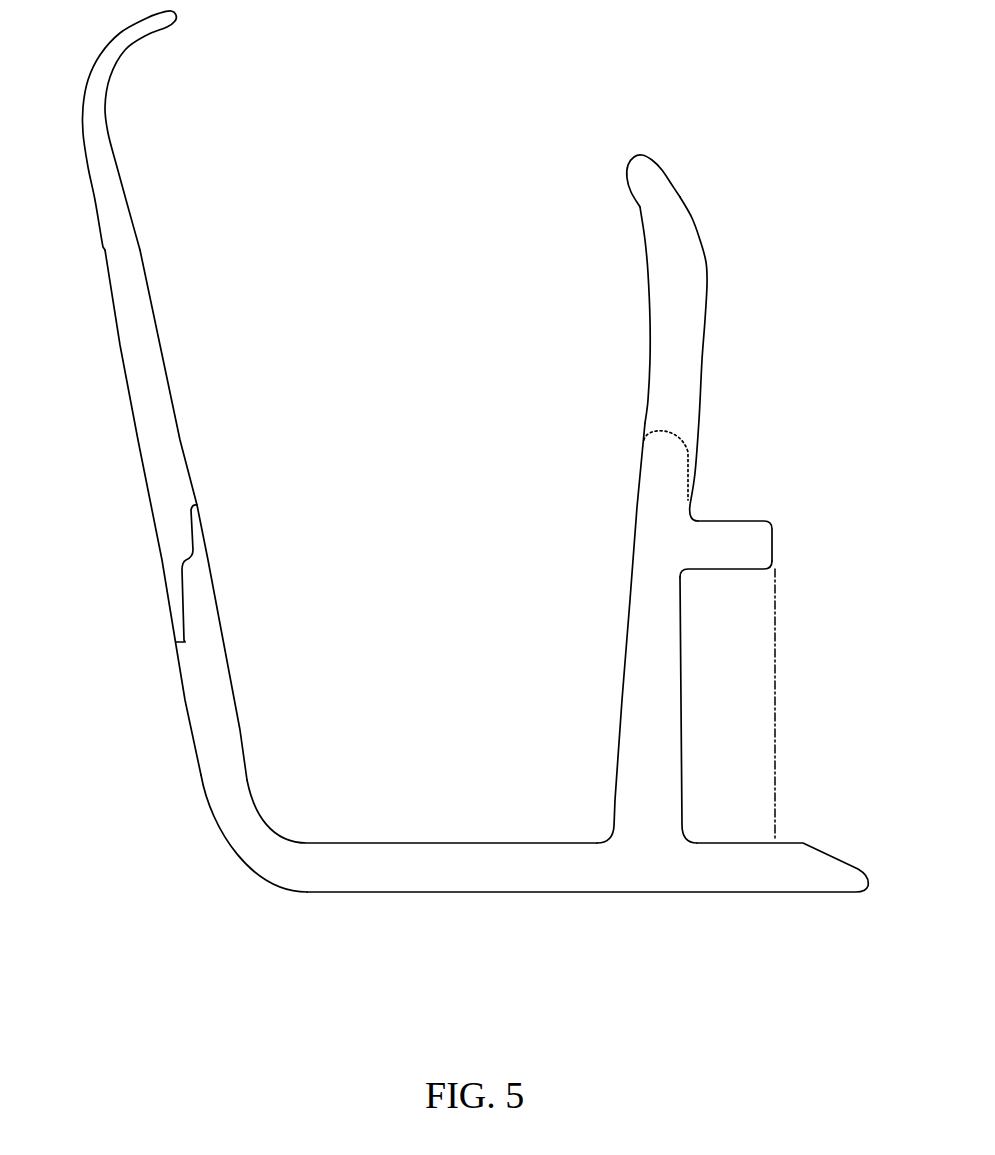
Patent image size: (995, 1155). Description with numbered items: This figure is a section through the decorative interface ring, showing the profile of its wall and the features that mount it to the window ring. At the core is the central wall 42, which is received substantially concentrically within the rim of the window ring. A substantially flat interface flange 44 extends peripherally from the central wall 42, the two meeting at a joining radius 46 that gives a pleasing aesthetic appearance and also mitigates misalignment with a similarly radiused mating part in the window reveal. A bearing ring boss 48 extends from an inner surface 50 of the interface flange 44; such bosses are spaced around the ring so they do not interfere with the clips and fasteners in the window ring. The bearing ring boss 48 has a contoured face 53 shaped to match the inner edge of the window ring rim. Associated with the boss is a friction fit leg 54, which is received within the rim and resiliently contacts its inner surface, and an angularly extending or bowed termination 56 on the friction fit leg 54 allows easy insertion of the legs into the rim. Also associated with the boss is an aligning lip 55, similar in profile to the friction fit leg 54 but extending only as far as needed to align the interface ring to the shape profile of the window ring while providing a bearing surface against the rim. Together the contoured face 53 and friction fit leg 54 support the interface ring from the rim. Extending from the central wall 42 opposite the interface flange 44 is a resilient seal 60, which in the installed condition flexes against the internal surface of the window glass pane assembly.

The central wall 42 is at (202, 717).
The interface flange 44 is at (720, 870).
The joining radius 46 is at (253, 873).
The bearing ring boss 48 is at (772, 557).
The inner surface 50 is at (568, 842).
The contoured face 53 is at (732, 520).
The friction fit leg 54 is at (678, 332).
The aligning lip 55 is at (670, 432).
The bowed termination 56 is at (653, 205).
The resilient seal 60 is at (148, 398).